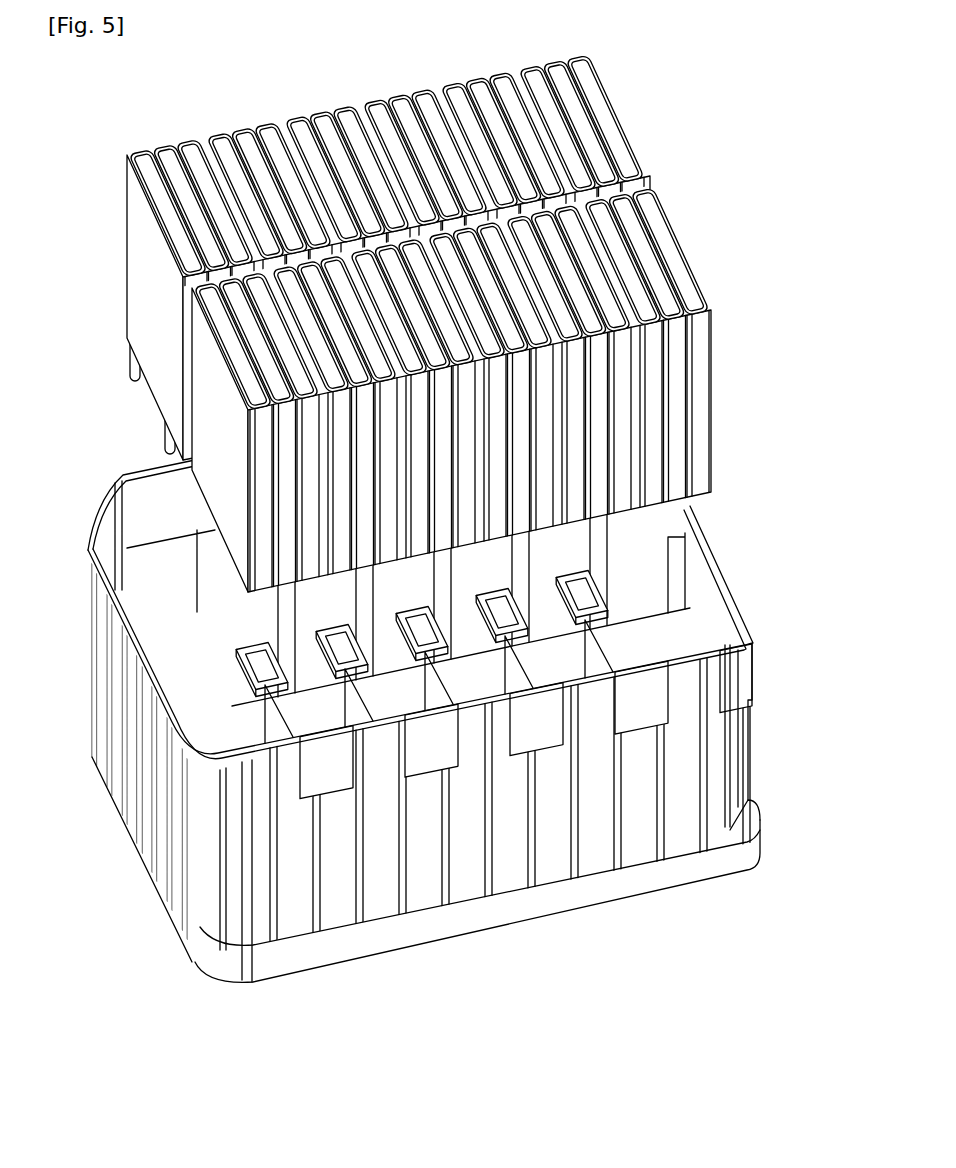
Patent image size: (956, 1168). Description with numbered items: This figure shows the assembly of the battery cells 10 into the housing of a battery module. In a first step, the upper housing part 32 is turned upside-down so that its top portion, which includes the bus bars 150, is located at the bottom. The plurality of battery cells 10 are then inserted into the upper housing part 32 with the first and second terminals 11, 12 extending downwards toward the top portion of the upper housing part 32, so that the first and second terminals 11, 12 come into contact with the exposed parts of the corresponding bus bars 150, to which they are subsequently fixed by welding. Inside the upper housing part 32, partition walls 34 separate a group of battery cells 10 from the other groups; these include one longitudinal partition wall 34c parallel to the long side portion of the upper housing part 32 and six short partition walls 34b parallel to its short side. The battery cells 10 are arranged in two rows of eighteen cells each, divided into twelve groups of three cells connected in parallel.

The battery cells 10 is at (143, 282).
The first terminal 11 is at (133, 367).
The second terminal 12 is at (167, 445).
The upper housing part 32 is at (764, 752).
The partition walls 34 is at (620, 610).
The short partition walls 34b is at (633, 532).
The longitudinal partition wall 34c is at (550, 655).
The bus bars 150 is at (270, 660).